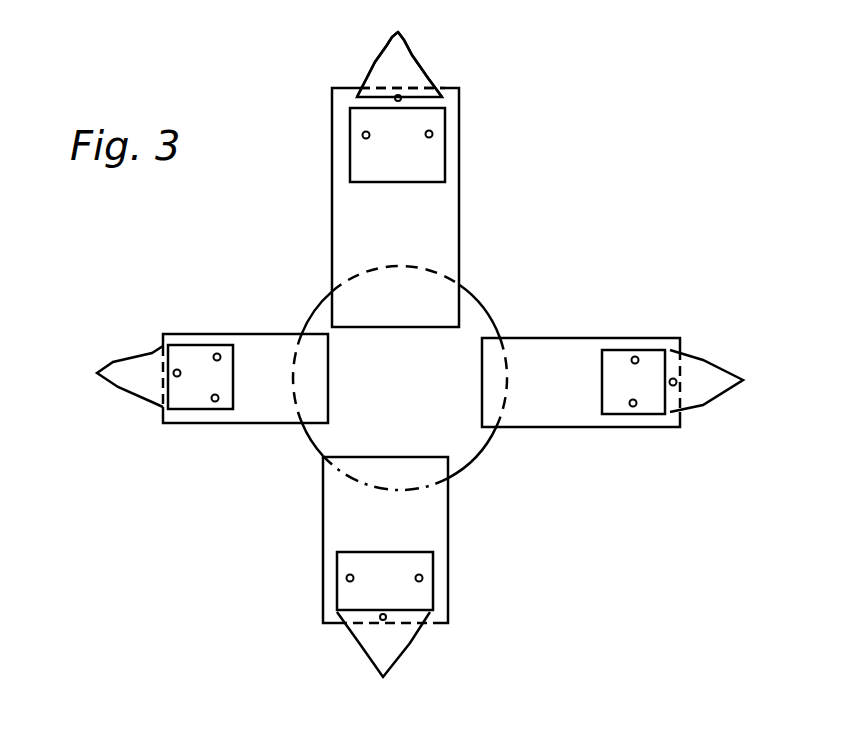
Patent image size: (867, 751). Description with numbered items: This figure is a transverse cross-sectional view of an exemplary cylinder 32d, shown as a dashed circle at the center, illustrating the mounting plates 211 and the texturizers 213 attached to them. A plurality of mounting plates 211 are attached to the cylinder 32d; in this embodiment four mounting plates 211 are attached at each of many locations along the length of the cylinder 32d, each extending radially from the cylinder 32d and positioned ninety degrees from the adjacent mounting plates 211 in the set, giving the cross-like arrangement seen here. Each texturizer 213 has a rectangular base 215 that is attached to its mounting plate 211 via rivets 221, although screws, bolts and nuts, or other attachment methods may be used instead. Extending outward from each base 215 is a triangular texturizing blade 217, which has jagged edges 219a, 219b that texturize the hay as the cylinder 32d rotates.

The cylinder 32d is at (432, 413).
The mounting plate 211 is at (459, 212).
The texturizer 213 is at (444, 70).
The rectangular base 215 is at (392, 168).
The triangular texturizing blade 217 is at (387, 78).
The jagged edge 219a is at (383, 55).
The jagged edge 219b is at (414, 55).
The rivet 221 is at (433, 134).